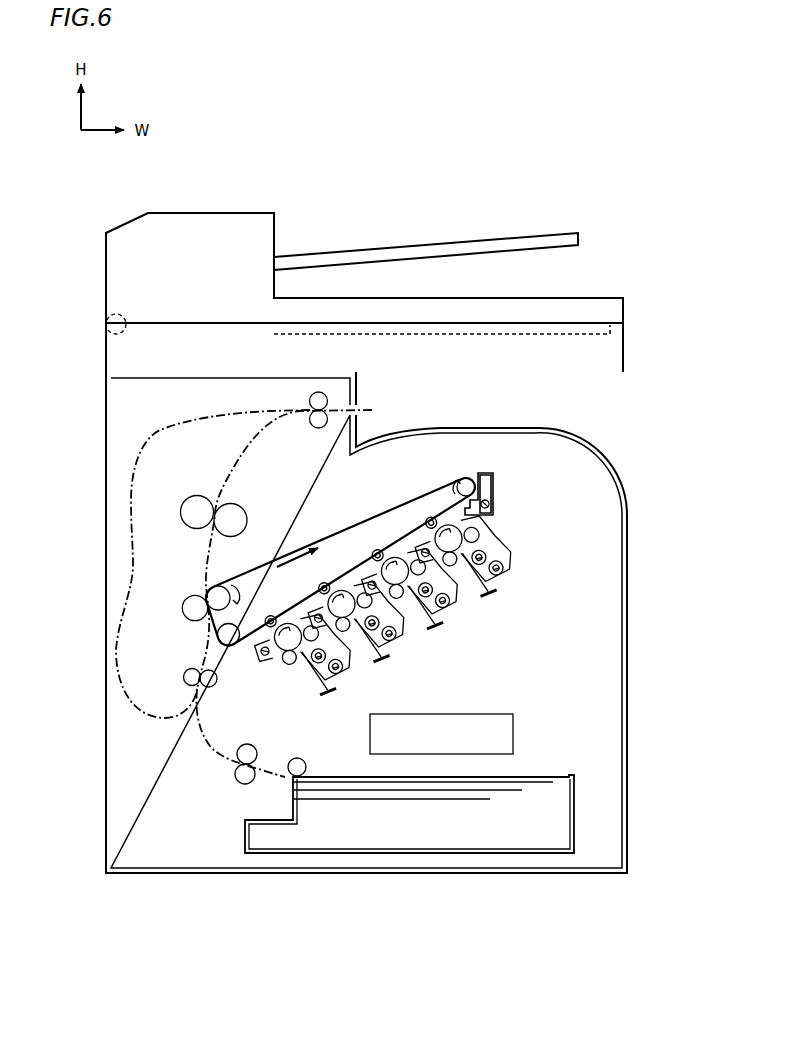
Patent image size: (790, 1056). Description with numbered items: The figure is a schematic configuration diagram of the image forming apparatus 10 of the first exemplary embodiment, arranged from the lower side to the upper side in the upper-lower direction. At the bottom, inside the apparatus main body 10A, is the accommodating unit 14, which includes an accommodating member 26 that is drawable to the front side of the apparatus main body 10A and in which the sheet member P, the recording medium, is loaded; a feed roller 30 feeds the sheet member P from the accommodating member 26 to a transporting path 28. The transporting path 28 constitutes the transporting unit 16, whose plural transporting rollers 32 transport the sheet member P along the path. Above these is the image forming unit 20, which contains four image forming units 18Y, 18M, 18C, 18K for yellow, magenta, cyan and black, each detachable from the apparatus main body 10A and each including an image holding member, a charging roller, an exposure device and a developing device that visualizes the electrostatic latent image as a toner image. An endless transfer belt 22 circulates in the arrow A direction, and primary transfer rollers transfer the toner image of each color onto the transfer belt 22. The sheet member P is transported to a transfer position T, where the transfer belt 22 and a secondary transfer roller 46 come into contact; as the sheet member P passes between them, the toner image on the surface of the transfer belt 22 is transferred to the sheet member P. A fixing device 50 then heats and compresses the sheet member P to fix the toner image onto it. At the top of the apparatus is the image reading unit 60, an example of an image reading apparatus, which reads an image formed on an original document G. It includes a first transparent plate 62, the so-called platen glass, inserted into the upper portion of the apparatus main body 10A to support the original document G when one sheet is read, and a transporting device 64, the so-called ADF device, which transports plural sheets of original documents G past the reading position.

The image forming apparatus 10 is at (108, 194).
The apparatus main body 10A is at (627, 650).
The accommodating unit 14 is at (600, 818).
The transporting unit 16 is at (152, 768).
The image forming unit (yellow) 18Y is at (521, 555).
The image forming unit (magenta) 18M is at (463, 621).
The image forming unit (cyan) 18C is at (414, 654).
The image forming unit (black) 18K is at (353, 682).
The image forming unit 20 is at (541, 512).
The transfer belt 22 is at (432, 488).
The accommodating member 26 is at (577, 835).
The transporting path 28 is at (210, 752).
The feed roller 30 is at (300, 758).
The transporting rollers 32 is at (320, 428).
The secondary transfer roller 46 is at (192, 620).
The fixing device 50 is at (207, 491).
The image reading unit 60 is at (616, 190).
The first transparent plate 62 is at (565, 337).
The transporting device 64 is at (222, 212).
The arrow A direction A is at (301, 548).
The original document G is at (533, 323).
The sheet member P is at (532, 777).
The transfer position T is at (207, 593).